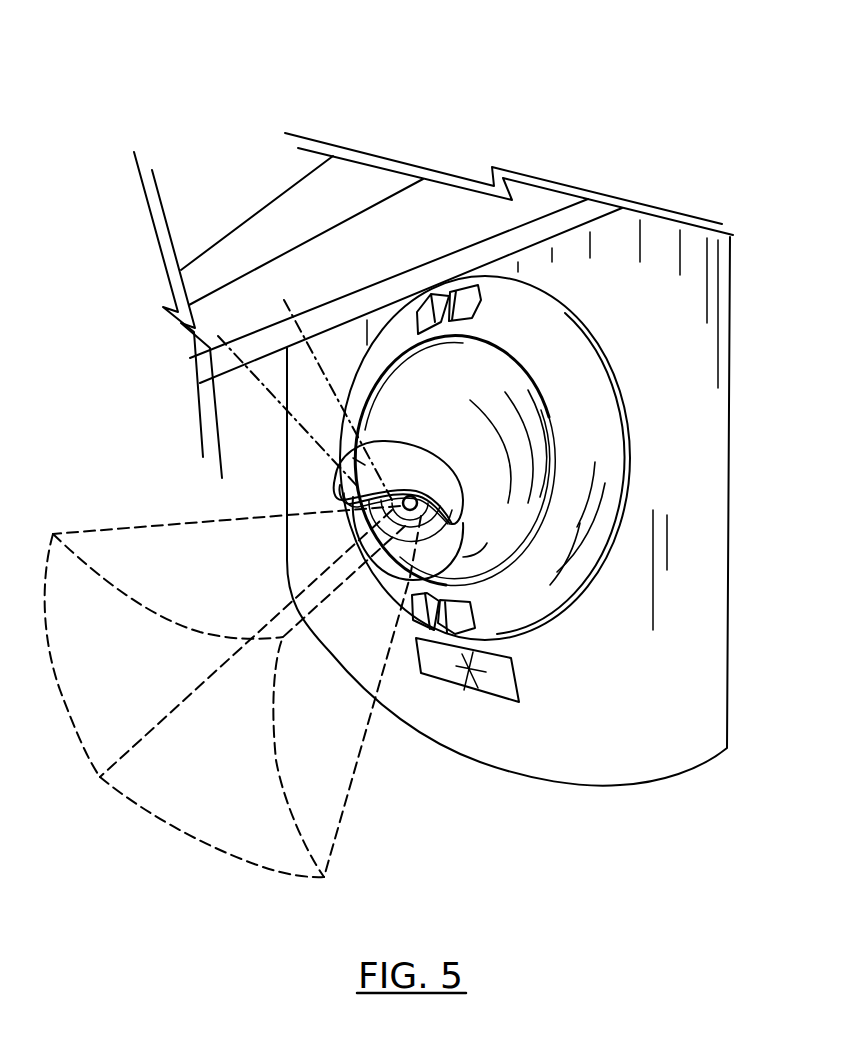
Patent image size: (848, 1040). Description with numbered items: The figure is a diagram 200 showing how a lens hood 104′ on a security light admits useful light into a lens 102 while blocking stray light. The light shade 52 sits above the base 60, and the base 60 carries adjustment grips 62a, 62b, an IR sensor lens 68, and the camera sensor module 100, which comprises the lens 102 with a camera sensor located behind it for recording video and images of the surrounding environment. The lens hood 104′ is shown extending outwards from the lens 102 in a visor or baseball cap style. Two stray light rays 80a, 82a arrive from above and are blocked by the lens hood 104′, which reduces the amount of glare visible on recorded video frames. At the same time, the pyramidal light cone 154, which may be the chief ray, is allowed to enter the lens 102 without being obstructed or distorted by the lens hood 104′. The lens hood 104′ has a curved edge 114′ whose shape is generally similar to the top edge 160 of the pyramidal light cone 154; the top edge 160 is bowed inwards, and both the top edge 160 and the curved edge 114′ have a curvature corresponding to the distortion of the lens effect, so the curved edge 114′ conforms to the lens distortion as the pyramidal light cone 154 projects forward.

The diagram 200 is at (348, 42).
The light shade 52 is at (603, 218).
The base 60 is at (732, 312).
The stray light ray 80a is at (283, 297).
The stray light ray 82a is at (278, 406).
The camera sensor module 100 is at (553, 430).
The adjustment grip 62a is at (478, 300).
The adjustment grip 62b is at (478, 623).
The lens hood 104′ is at (408, 441).
The curved edge 114′ is at (374, 478).
The lens 102 is at (360, 527).
The top edge 160 is at (140, 604).
The pyramidal light cone 154 is at (347, 803).
The IR sensor lens 68 is at (493, 697).